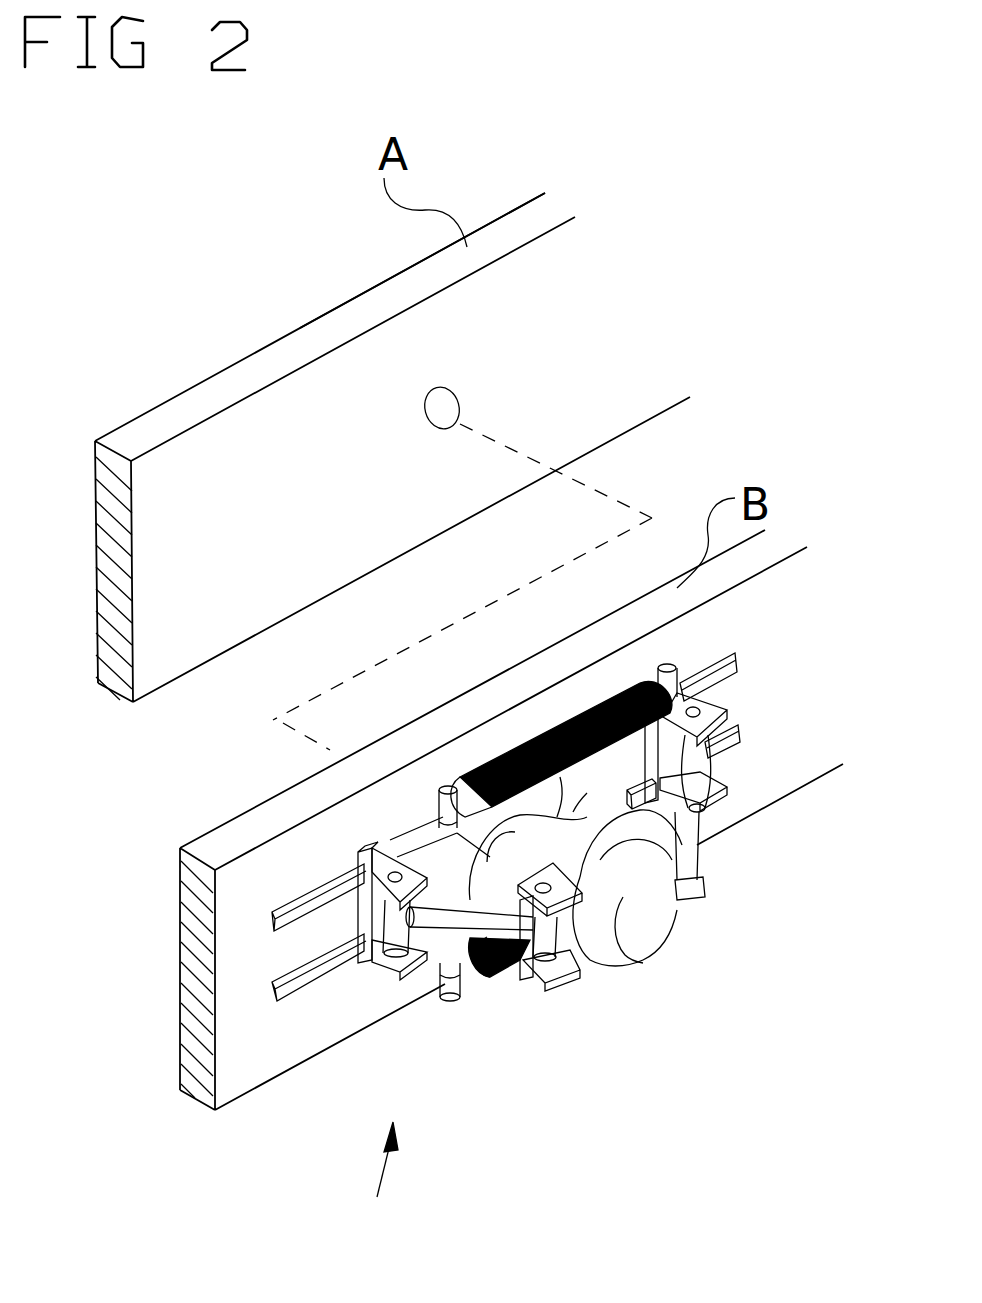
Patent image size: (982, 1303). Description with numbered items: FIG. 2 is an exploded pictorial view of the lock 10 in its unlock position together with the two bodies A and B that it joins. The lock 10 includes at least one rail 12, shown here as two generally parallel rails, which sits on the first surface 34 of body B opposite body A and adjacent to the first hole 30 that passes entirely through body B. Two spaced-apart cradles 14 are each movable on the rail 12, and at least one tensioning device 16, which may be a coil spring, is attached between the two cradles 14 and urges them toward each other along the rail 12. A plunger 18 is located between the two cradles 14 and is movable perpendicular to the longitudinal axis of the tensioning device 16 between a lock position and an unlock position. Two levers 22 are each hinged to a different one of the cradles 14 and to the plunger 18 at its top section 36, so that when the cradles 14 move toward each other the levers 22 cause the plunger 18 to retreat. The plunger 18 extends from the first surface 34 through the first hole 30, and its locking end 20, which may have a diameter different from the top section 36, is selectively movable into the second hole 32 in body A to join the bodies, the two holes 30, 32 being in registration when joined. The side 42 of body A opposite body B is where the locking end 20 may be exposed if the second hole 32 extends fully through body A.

The lock 10 is at (371, 1187).
The rail 12 is at (737, 657).
The cradles 14 is at (733, 791).
The tensioning device 16 is at (522, 740).
The plunger 18 is at (643, 963).
The locking end 20 is at (490, 857).
The levers 22 is at (700, 853).
The first hole 30 is at (572, 812).
The second hole 32 is at (457, 412).
The first surface 34 is at (261, 898).
The top section 36 is at (657, 867).
The side 42 is at (520, 205).